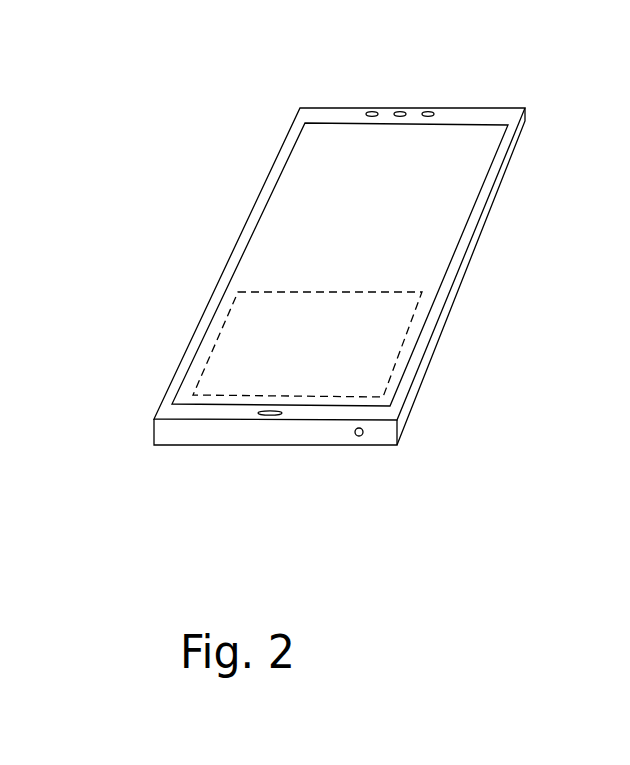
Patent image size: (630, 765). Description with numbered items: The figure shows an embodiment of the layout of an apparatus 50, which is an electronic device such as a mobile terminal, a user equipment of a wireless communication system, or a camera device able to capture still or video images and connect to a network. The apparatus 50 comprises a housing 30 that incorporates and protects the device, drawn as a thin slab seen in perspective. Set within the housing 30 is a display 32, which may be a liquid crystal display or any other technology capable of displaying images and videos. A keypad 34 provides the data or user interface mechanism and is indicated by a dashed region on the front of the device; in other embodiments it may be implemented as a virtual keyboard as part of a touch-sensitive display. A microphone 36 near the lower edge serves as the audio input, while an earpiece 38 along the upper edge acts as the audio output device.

The housing 30 is at (313, 107).
The display 32 is at (447, 209).
The keypad 34 is at (385, 359).
The microphone 36 is at (277, 415).
The earpiece 38 is at (400, 110).
The apparatus 50 is at (548, 78).